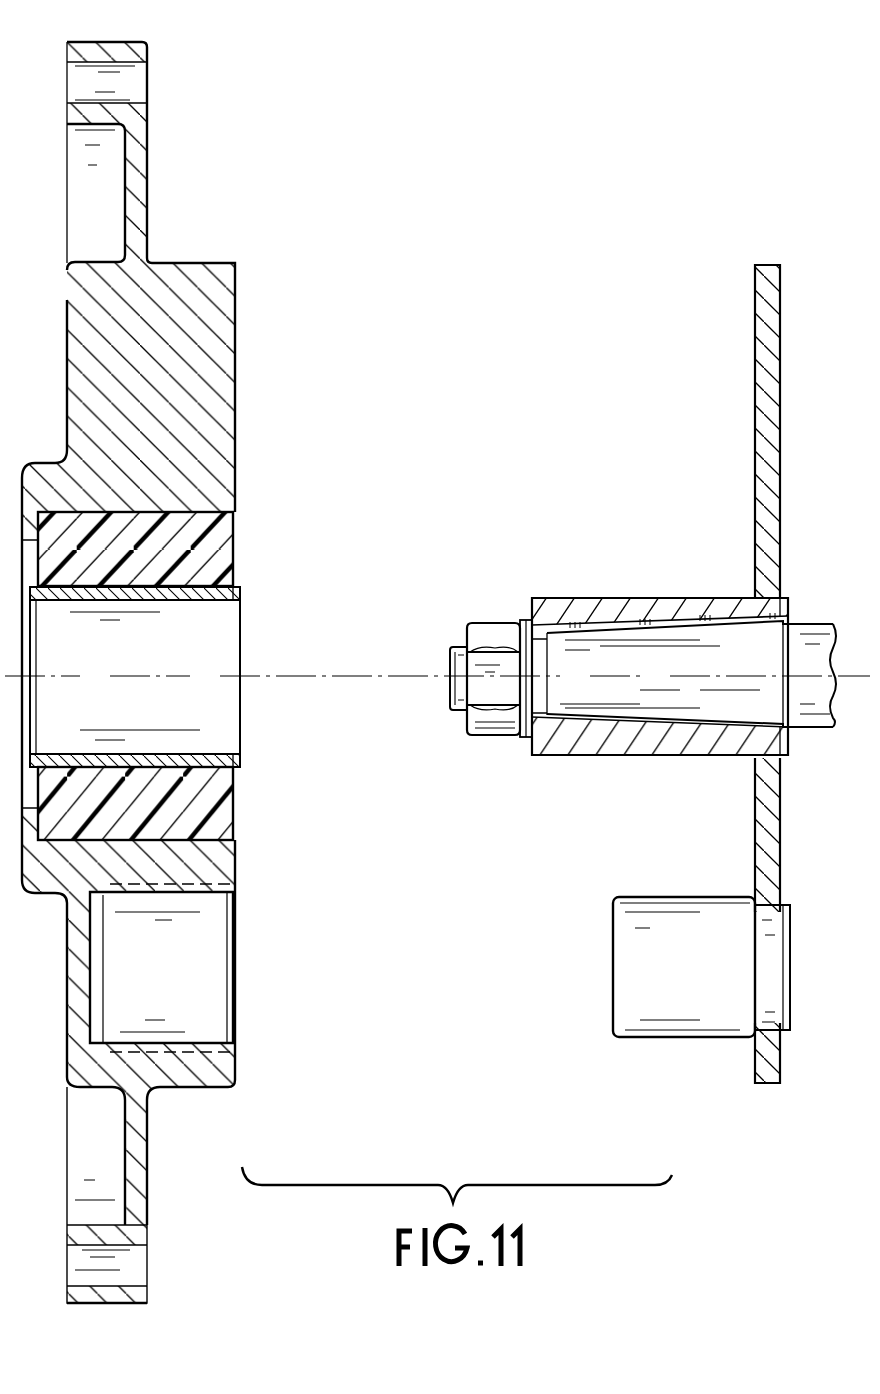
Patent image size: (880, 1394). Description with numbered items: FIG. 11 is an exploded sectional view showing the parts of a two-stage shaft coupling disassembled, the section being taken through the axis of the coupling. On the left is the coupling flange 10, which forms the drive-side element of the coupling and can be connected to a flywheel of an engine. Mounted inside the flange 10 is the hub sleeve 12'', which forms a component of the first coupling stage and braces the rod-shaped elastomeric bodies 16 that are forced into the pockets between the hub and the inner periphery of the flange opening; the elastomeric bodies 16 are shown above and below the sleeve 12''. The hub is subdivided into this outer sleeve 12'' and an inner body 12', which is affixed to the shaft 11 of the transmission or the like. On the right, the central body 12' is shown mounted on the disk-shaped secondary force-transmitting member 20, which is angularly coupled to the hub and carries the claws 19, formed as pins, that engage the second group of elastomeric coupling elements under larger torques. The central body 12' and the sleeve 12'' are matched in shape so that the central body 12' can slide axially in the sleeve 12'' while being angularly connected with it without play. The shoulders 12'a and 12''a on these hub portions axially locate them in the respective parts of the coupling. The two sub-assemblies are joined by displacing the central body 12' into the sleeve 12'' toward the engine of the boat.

The coupling flange 10 is at (220, 318).
The shaft 11 is at (687, 705).
The inner body 12' is at (687, 627).
The shoulder 12'a is at (811, 627).
The hub sleeve 12'' is at (184, 692).
The shoulder 12''a is at (285, 692).
The elastomeric bodies 16 is at (210, 537).
The claws 19 is at (673, 1022).
The secondary force-transmitting member 20 is at (773, 333).